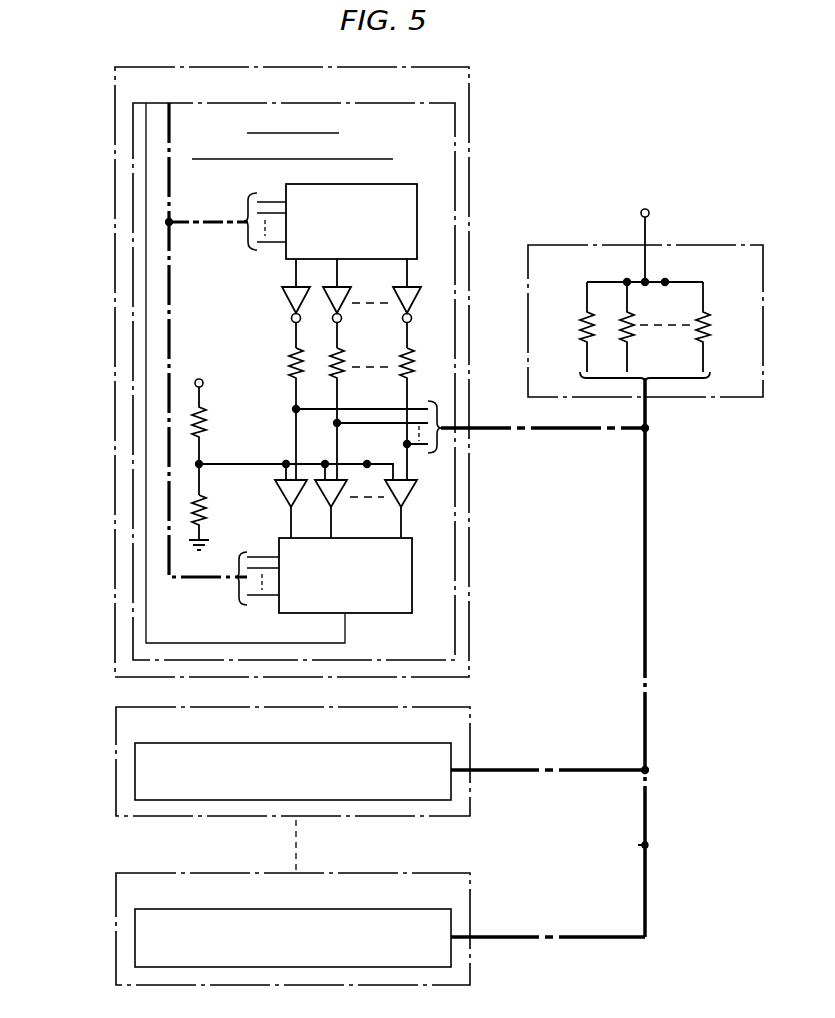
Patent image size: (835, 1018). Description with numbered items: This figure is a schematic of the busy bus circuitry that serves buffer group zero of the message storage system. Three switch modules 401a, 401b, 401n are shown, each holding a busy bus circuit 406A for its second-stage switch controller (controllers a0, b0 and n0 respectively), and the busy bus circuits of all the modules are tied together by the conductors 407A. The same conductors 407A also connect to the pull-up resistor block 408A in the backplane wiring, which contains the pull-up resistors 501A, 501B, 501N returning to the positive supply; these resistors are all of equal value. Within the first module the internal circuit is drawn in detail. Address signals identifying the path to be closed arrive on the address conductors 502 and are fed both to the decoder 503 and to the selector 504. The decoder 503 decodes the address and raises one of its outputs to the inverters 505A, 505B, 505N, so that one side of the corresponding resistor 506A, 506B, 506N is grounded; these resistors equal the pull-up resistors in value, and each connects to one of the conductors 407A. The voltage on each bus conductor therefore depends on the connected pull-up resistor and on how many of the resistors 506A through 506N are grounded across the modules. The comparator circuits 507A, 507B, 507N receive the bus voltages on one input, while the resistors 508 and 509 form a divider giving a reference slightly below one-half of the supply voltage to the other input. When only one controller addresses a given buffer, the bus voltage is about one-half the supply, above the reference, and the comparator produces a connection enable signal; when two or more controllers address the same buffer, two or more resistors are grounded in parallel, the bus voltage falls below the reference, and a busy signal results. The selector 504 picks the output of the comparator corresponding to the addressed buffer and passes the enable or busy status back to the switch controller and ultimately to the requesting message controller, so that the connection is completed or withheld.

The switch module 401a is at (115, 90).
The switch module 401b is at (116, 731).
The switch module 401n is at (116, 896).
The busy bus circuit 406A is at (297, 103).
The conductors 407A is at (646, 421).
The pull-up resistor block 408A is at (590, 245).
The pull-up resistor 501A is at (583, 318).
The pull-up resistor 501B is at (621, 316).
The pull-up resistor 501N is at (712, 323).
The address conductors 502 is at (170, 185).
The decoder 503 is at (359, 191).
The selector 504 is at (314, 613).
The inverter 505A is at (282, 300).
The inverter 505B is at (328, 289).
The inverter 505N is at (399, 292).
The resistor 506A is at (288, 357).
The resistor 506B is at (329, 352).
The resistor 506N is at (398, 358).
The comparator circuit 507A is at (284, 492).
The comparator circuit 507B is at (325, 492).
The comparator circuit 507N is at (400, 508).
The resistor 508 is at (211, 426).
The resistor 509 is at (205, 515).